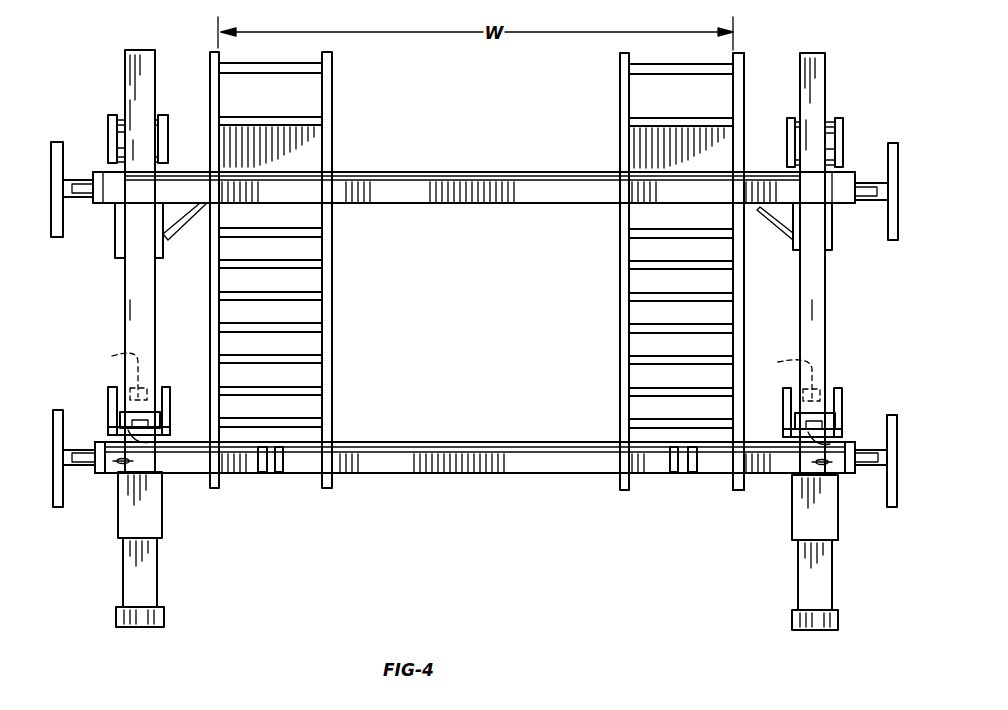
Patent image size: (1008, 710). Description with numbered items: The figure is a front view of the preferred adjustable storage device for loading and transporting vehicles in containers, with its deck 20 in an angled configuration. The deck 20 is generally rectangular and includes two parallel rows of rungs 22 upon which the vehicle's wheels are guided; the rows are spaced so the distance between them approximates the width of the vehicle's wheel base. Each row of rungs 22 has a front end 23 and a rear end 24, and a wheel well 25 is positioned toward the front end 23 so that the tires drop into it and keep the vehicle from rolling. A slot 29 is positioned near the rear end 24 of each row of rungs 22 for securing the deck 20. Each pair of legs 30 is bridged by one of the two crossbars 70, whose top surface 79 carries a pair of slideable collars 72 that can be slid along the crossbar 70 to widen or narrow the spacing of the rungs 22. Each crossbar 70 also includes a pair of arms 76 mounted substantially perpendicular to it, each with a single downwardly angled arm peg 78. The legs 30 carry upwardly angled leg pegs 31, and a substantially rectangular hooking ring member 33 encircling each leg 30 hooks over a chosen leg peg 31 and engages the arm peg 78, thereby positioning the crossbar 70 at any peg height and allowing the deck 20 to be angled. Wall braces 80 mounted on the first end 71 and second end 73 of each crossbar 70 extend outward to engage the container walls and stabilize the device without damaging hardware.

The deck 20 is at (333, 96).
The rungs 22 is at (252, 68).
The front end 23 is at (740, 52).
The rear end 24 is at (738, 492).
The wheel well 25 is at (255, 103).
The slot 29 is at (278, 474).
The legs 30 is at (128, 62).
The leg pegs 31 is at (453, 374).
The hooking ring member 33 is at (108, 118).
The crossbar 70 is at (472, 120).
The first end 71 is at (98, 172).
The slideable collars 72 is at (466, 180).
The second end 73 is at (848, 172).
The arms 76 is at (152, 440).
The arm peg 78 is at (150, 414).
The top surface 79 is at (410, 172).
The wall braces 80 is at (52, 145).